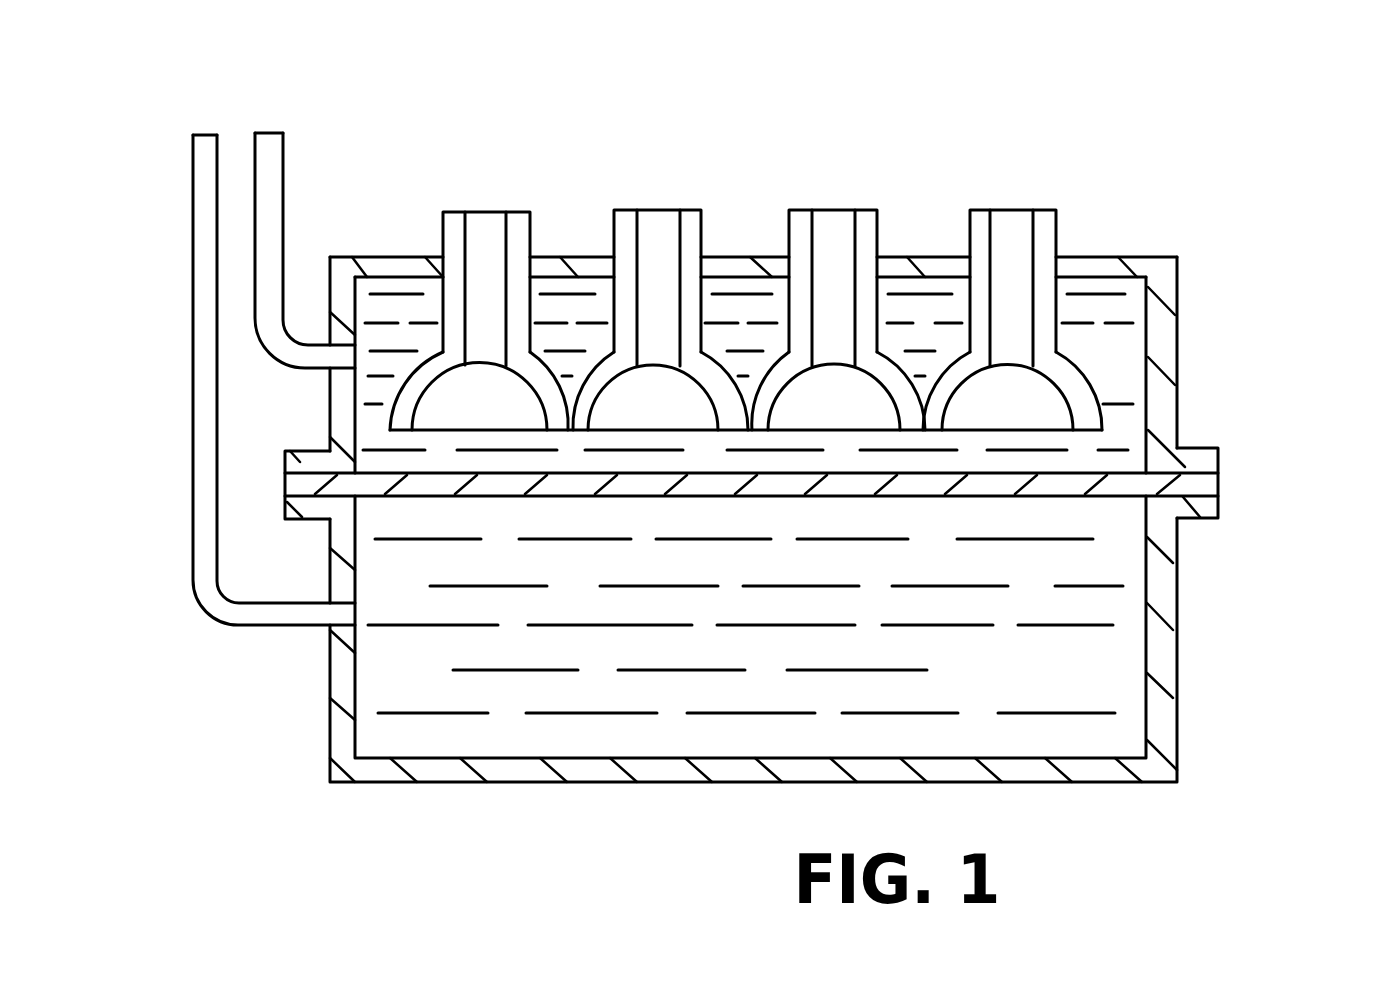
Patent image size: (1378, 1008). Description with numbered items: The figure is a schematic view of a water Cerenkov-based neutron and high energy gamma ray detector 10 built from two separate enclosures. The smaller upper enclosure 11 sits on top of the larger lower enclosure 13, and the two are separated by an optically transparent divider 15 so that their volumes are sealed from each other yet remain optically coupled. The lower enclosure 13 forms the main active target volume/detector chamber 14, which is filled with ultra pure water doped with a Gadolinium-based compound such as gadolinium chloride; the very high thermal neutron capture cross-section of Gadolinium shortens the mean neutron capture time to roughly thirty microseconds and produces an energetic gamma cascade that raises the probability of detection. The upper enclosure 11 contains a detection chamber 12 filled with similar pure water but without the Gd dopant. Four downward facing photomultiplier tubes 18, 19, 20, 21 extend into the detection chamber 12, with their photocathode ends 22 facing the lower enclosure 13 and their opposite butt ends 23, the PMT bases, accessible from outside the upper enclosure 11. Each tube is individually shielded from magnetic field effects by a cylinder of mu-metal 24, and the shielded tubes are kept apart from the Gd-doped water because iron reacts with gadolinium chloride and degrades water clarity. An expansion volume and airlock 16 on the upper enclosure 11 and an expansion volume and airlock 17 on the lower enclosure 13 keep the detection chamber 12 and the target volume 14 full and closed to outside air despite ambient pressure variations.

The water Cerenkov-based neutron and high energy gamma ray detector 10 is at (1113, 63).
The upper enclosure 11 is at (1178, 287).
The detection chamber 12 is at (1125, 366).
The lower enclosure 13 is at (1173, 650).
The target volume/detector chamber 14 is at (1095, 680).
The optically transparent divider 15 is at (1218, 482).
The expansion volume and airlock 16 is at (283, 185).
The expansion volume and airlock 17 is at (194, 207).
The photomultiplier tube 18 is at (487, 275).
The photomultiplier tube 19 is at (655, 282).
The photomultiplier tube 20 is at (832, 282).
The photomultiplier tube 21 is at (1013, 272).
The photocathode end 22 is at (507, 417).
The butt end 23 is at (478, 210).
The mu-metal cylinder 24 is at (530, 240).